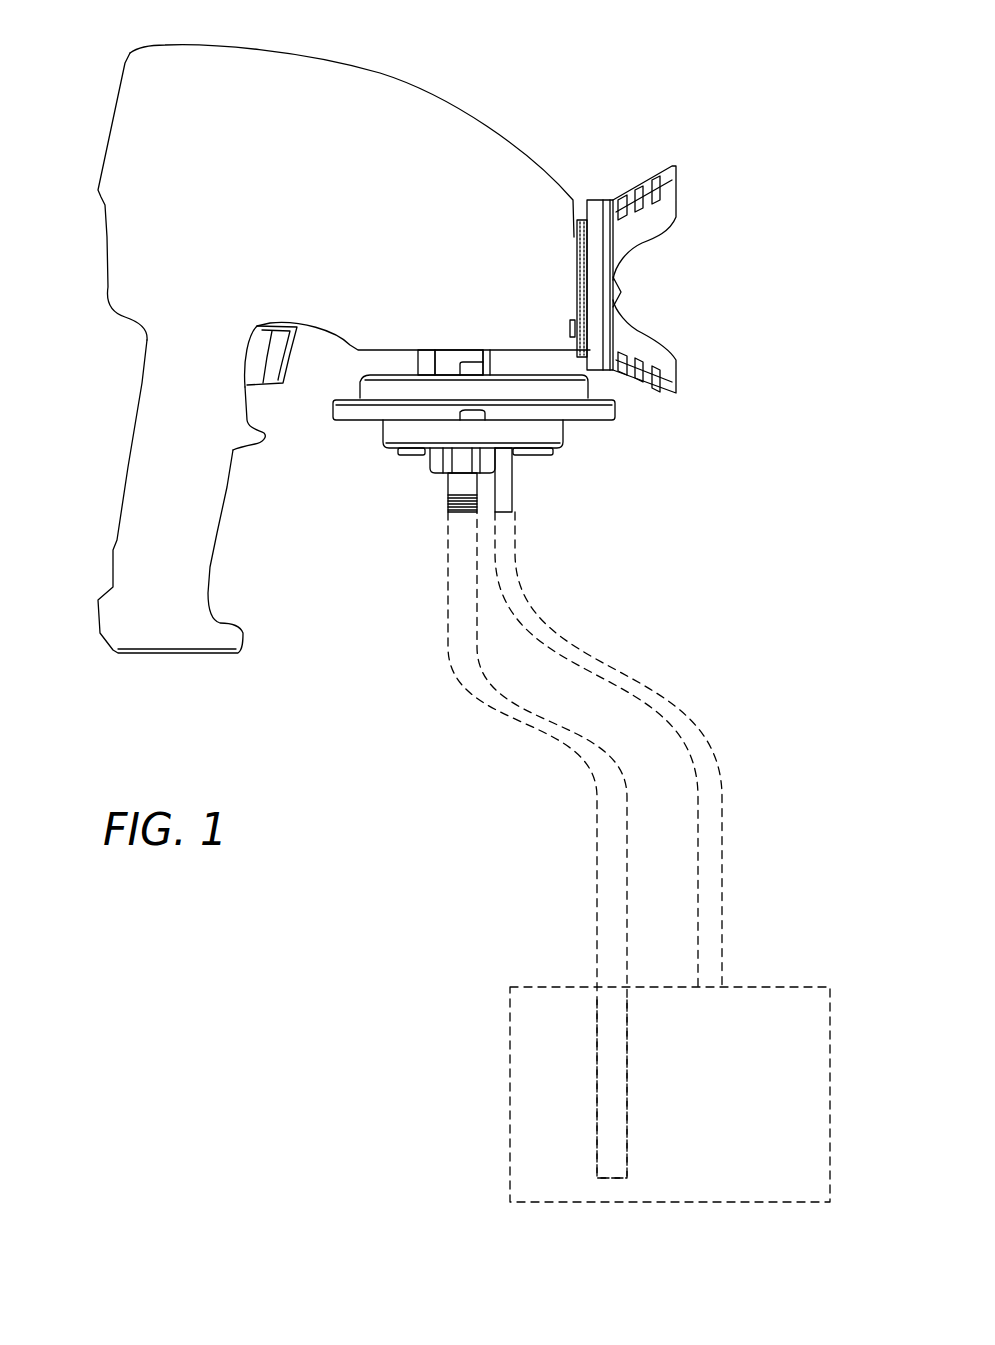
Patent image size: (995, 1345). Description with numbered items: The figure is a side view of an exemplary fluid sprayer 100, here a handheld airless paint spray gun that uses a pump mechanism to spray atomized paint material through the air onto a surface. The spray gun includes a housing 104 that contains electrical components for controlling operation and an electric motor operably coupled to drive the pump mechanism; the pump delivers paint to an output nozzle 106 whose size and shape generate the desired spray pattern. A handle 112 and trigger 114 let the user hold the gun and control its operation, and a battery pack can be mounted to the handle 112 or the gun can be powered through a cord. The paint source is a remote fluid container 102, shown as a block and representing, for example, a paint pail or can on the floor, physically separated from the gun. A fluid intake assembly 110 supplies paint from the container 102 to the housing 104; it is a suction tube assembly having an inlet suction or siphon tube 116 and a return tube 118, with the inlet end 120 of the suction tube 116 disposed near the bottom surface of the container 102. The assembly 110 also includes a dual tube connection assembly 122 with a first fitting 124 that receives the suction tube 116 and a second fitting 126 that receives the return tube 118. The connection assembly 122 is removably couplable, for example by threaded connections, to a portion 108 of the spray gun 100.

The fluid sprayer 100 is at (580, 97).
The fluid container 102 is at (519, 968).
The housing 104 is at (338, 65).
The output nozzle 106 is at (625, 283).
The portion of spray gun 108 is at (590, 433).
The fluid intake assembly 110 is at (590, 532).
The handle 112 is at (138, 467).
The trigger 114 is at (283, 353).
The suction tube 116 is at (608, 913).
The return tube 118 is at (708, 892).
The inlet end 120 is at (590, 1150).
The dual tube connection assembly 122 is at (410, 468).
The first fitting 124 is at (463, 500).
The second fitting 126 is at (505, 463).